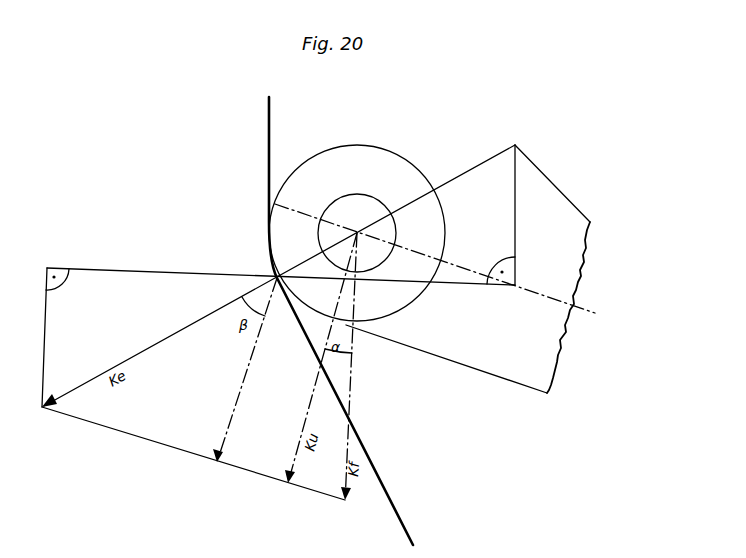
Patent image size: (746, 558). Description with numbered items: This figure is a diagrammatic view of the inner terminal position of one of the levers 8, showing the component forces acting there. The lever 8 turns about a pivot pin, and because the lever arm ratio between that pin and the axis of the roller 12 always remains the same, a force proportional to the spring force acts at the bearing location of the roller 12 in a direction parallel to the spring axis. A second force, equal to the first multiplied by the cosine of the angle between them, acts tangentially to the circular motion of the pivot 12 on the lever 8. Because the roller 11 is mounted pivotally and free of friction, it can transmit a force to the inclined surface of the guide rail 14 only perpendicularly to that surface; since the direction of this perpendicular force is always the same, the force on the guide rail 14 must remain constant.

The lever 8 is at (543, 268).
The roller 11 is at (330, 190).
The roller axis 12 is at (363, 212).
The guide rail 14 is at (377, 467).